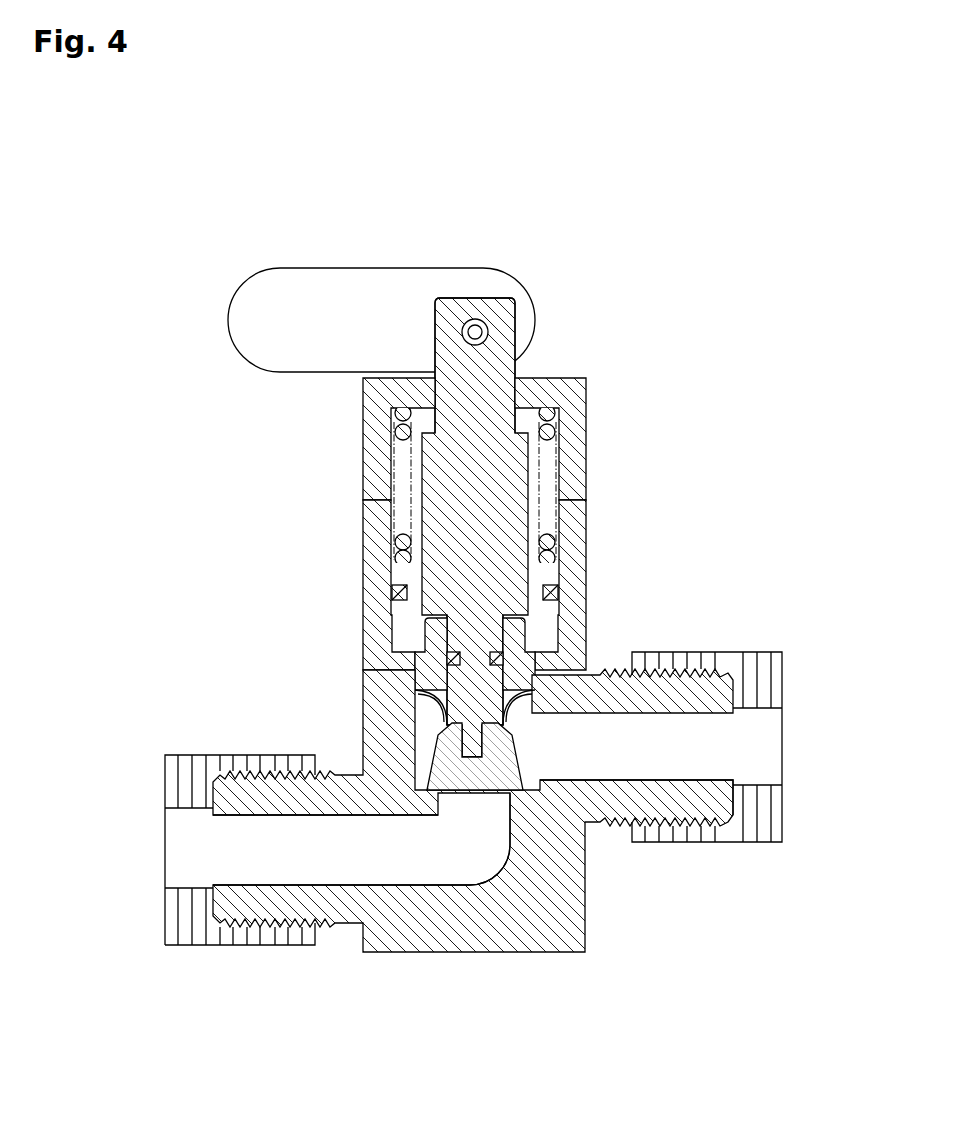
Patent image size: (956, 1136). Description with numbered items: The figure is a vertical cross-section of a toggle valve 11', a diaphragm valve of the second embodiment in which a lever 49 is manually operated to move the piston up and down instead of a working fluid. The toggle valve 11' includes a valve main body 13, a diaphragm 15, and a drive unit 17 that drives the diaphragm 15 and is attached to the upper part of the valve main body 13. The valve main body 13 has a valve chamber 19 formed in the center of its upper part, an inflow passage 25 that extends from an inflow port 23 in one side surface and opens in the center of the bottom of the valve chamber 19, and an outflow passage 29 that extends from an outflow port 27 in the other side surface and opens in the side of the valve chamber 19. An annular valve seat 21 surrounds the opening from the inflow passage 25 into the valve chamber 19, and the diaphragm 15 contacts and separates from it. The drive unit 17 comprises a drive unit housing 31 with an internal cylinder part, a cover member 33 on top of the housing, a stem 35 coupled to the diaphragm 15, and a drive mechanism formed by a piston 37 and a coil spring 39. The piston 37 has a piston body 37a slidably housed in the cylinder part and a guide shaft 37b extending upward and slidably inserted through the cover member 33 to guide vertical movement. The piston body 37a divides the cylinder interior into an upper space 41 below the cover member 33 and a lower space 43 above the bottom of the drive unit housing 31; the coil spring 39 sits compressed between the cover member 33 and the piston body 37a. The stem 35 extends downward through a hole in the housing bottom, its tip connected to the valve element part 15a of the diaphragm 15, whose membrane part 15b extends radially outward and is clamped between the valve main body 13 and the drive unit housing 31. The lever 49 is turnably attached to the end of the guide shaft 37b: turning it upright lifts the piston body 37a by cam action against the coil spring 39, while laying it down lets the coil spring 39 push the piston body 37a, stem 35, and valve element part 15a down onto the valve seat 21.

The toggle valve 11' is at (477, 593).
The lever 49 is at (336, 290).
The drive unit 17 is at (598, 432).
The piston 37 is at (518, 500).
The guide shaft 37b is at (512, 376).
The piston body 37a is at (520, 580).
The cover member 33 is at (363, 460).
The drive unit housing 31 is at (363, 562).
The upper space 41 is at (420, 426).
The coil spring 39 is at (548, 546).
The lower space 43 is at (556, 628).
The stem 35 is at (463, 640).
The valve main body 13 is at (568, 916).
The outflow passage 29 is at (682, 772).
The inflow passage 25 is at (363, 868).
The annular valve seat 21 is at (545, 790).
The valve chamber 19 is at (515, 706).
The diaphragm 15 is at (272, 691).
The valve element part 15a is at (412, 732).
The membrane part 15b is at (395, 680).
The inflow port 23 is at (187, 851).
The outflow port 27 is at (762, 744).